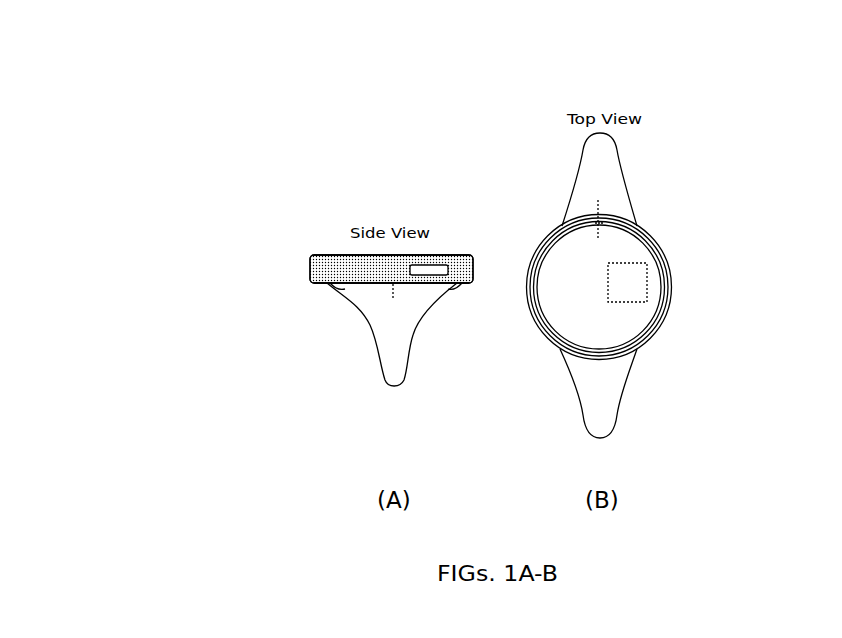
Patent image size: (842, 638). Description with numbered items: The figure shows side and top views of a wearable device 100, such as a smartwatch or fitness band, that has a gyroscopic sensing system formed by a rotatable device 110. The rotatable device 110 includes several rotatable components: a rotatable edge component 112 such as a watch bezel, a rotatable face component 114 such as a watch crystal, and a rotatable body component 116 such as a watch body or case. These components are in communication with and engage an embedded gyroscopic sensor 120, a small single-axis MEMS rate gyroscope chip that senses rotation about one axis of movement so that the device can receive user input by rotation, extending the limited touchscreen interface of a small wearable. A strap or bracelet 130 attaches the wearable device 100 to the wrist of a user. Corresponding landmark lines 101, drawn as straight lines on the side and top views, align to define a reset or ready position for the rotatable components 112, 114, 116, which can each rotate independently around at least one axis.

In FIG. 1A, the wearable device 100 is at (548, 149).
In FIG. 1B, the wearable device 100 is at (633, 285).
In FIG. 1A, the landmark lines 101 is at (393, 297).
In FIG. 1B, the landmark lines 101 is at (601, 227).
In FIG. 1A, the rotatable device 110 is at (218, 198).
In FIG. 1A, the rotatable edge component 112 is at (310, 273).
In FIG. 1B, the rotatable edge component 112 is at (647, 322).
In FIG. 1A, the rotatable face component 114 is at (340, 255).
In FIG. 1B, the rotatable face component 114 is at (590, 273).
In FIG. 1A, the rotatable body component 116 is at (340, 284).
In FIG. 1B, the rotatable body component 116 is at (647, 340).
In FIG. 1A, the gyroscopic sensor 120 is at (432, 275).
In FIG. 1B, the gyroscopic sensor 120 is at (610, 283).
In FIG. 1A, the strap or bracelet 130 is at (397, 352).
In FIG. 1B, the strap or bracelet 130 is at (598, 285).